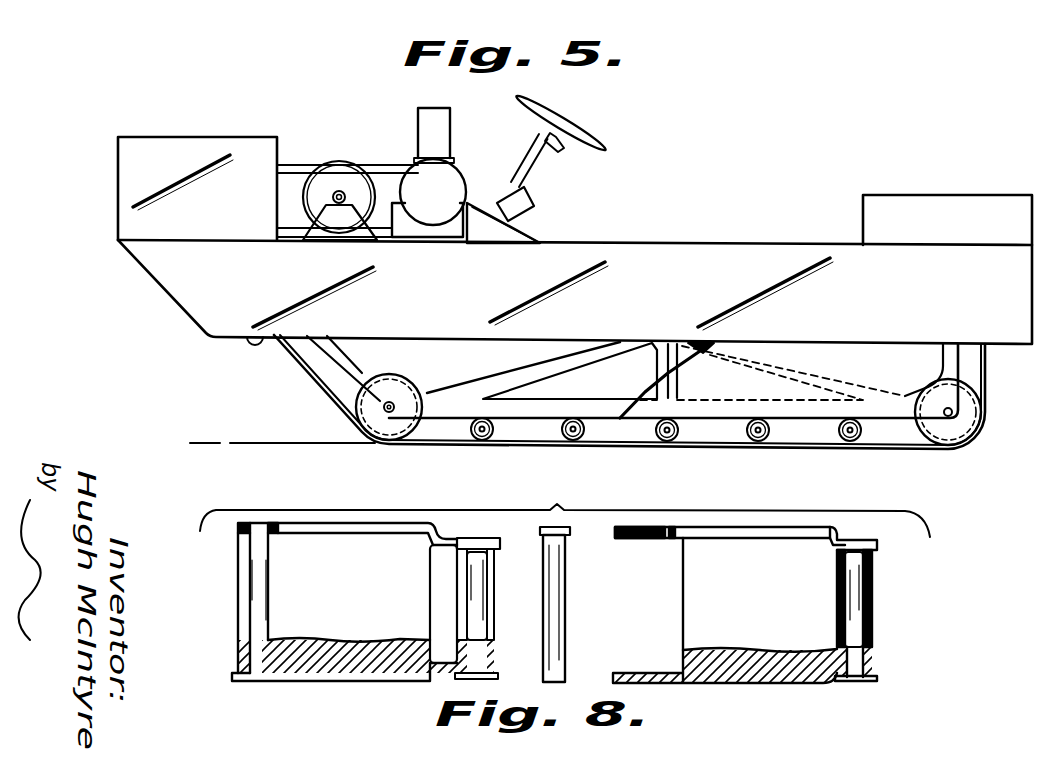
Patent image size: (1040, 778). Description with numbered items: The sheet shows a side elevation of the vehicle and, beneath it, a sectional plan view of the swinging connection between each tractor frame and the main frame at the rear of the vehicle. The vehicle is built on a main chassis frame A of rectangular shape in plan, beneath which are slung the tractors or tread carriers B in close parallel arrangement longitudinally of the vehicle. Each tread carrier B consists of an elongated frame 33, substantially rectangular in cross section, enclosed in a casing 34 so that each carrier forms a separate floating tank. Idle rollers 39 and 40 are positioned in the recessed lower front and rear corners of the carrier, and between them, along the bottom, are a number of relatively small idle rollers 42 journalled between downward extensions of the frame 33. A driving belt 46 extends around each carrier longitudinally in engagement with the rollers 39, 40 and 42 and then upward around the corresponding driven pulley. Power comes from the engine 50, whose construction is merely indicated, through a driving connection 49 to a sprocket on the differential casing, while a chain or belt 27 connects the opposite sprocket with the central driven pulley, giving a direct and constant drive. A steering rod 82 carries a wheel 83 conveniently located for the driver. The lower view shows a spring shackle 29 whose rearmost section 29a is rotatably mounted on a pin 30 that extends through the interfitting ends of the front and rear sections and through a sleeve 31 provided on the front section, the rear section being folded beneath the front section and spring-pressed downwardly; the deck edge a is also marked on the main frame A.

In FIG. 5, the driving belt or chain 27 is at (299, 161).
In FIG. 5, the driving connection 49 is at (374, 164).
In FIG. 5, the engine 50 is at (429, 172).
In FIG. 5, the steering rod 82 is at (537, 183).
In FIG. 5, the wheel 83 is at (606, 143).
In FIG. 5, the deck a is at (685, 243).
In FIG. 5, the main chassis frame A is at (575, 241).
In FIG. 5, the tractors or tread carriers B is at (791, 372).
In FIG. 5, the elongated frame 33 is at (465, 384).
In FIG. 5, the casing 34 is at (647, 391).
In FIG. 5, the idle roller 39 is at (368, 420).
In FIG. 5, the idle roller 40 is at (972, 418).
In FIG. 5, the small idle rollers 42 is at (493, 441).
In FIG. 5, the driving belt 46 is at (897, 448).
In FIG. 8, the spring shackle 29 is at (326, 530).
In FIG. 8, the rearmost section 29a is at (740, 528).
In FIG. 8, the pin 30 is at (568, 582).
In FIG. 8, the sleeve 31 is at (497, 605).